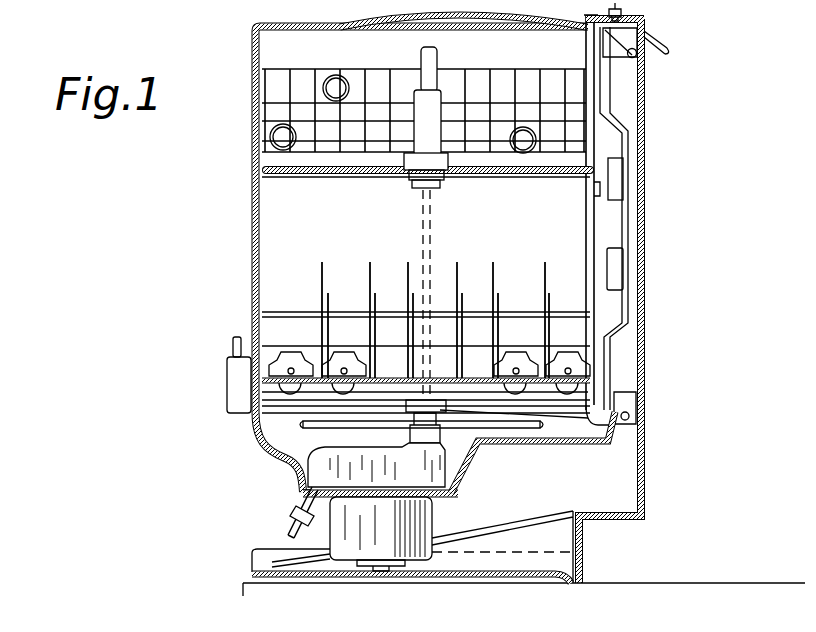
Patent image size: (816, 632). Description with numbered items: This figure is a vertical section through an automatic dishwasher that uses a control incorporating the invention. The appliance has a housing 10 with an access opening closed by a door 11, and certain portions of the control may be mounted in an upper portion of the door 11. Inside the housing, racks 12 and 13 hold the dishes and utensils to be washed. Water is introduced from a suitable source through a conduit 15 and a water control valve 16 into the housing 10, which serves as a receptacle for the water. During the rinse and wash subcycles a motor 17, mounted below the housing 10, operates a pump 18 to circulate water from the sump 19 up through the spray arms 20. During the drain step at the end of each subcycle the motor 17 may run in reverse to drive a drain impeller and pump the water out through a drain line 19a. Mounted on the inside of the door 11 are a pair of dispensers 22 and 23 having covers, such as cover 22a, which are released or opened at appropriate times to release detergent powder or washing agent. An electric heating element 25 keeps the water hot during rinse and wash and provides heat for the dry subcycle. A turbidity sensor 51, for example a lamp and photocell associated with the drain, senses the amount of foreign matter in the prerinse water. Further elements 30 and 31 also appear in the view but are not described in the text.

The housing 10 is at (256, 140).
The door 11 is at (648, 88).
The rack 12 is at (316, 69).
The rack 13 is at (322, 266).
The conduit 15 is at (234, 346).
The water control valve 16 is at (230, 413).
The motor 17 is at (432, 534).
The pump 18 is at (447, 462).
The sump 19 is at (447, 482).
The drain line 19a is at (290, 526).
The spray arms 20 is at (311, 183).
The dispenser 22 is at (618, 182).
The cover 22a is at (593, 172).
The dispenser 23 is at (622, 268).
The electric heating element 25 is at (560, 442).
The turbidity sensor 51 is at (290, 508).
The base 30 is at (173, 626).
The assembly 31 is at (569, 626).